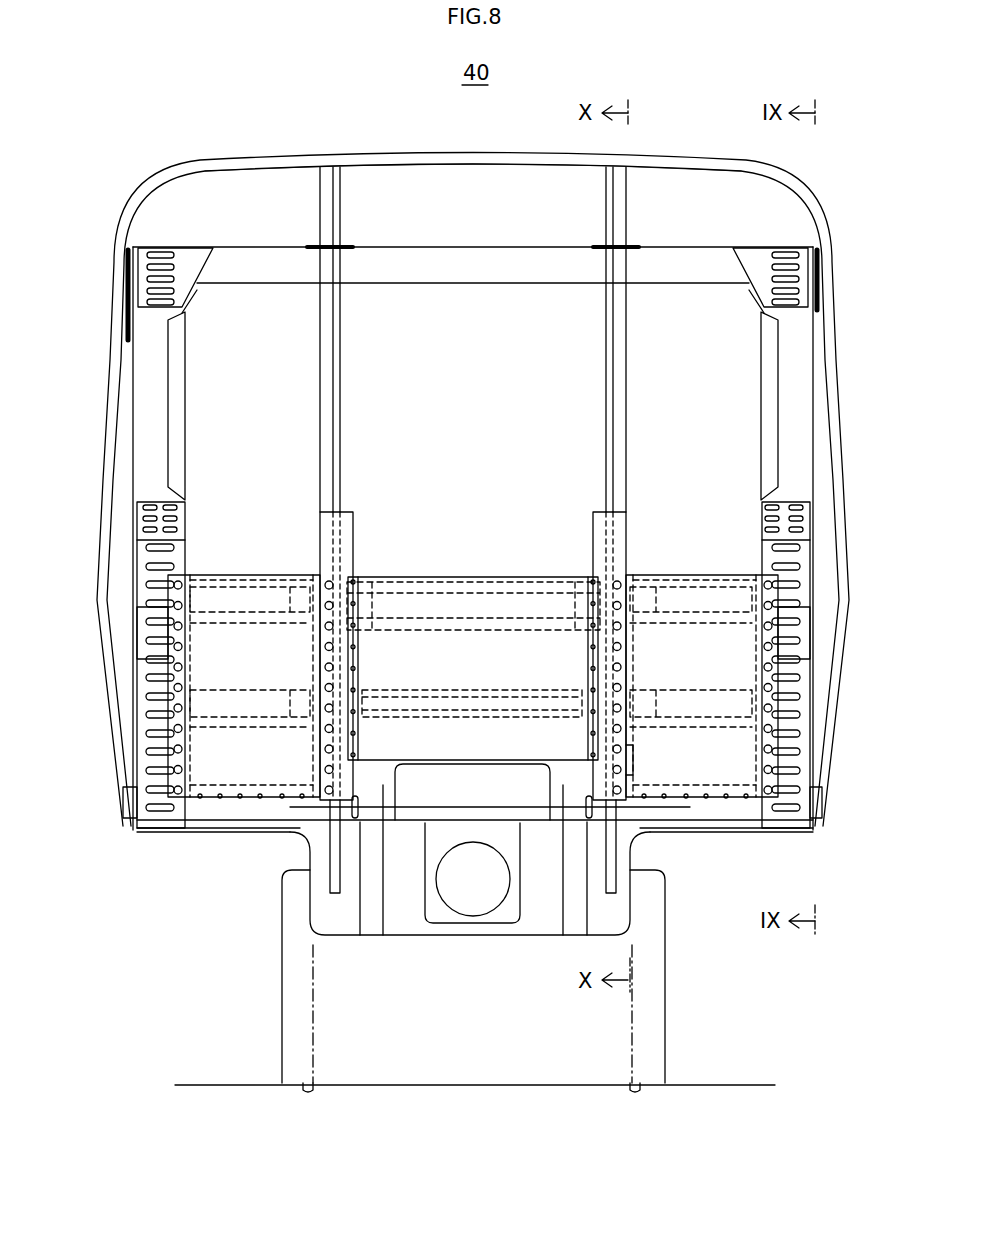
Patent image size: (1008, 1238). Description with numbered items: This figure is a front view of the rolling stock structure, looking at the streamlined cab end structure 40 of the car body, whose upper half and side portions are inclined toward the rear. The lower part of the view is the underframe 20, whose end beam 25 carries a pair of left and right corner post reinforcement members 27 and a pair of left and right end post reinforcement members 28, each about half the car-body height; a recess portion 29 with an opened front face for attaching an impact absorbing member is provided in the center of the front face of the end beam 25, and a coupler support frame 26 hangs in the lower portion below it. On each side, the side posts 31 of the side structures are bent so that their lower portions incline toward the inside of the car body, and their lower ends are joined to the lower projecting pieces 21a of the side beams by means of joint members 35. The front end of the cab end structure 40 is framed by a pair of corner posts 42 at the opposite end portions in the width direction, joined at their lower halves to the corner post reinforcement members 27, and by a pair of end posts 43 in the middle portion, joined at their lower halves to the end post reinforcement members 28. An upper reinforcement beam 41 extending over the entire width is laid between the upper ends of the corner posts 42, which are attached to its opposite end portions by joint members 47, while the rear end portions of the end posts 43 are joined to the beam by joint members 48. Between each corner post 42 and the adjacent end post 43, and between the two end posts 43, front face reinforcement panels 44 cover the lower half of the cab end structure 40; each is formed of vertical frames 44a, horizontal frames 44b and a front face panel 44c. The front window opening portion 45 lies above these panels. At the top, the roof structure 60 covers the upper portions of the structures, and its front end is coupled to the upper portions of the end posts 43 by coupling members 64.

The underframe 20 is at (228, 848).
The lower projecting piece 21a is at (128, 823).
The end beam 25 is at (725, 828).
The coupler support frame 26 is at (372, 925).
The corner post reinforcement member 27 is at (140, 748).
The end post reinforcement member 28 is at (332, 862).
The recess portion 29 is at (507, 773).
The side post 31 is at (107, 542).
The joint member 35 is at (120, 799).
The cab end structure 40 is at (428, 240).
The upper reinforcement beam 41 is at (463, 277).
The corner post 42 is at (178, 440).
The end post 43 is at (335, 377).
The front face reinforcement panel 44 is at (262, 562).
The vertical frame 44a is at (358, 675).
The horizontal frame 44b is at (492, 627).
The front face panel 44c is at (545, 577).
The front window opening portion 45 is at (625, 760).
The joint member 47 is at (190, 255).
The joint member 48 is at (348, 246).
The roof structure 60 is at (268, 150).
The coupling member 64 is at (325, 212).